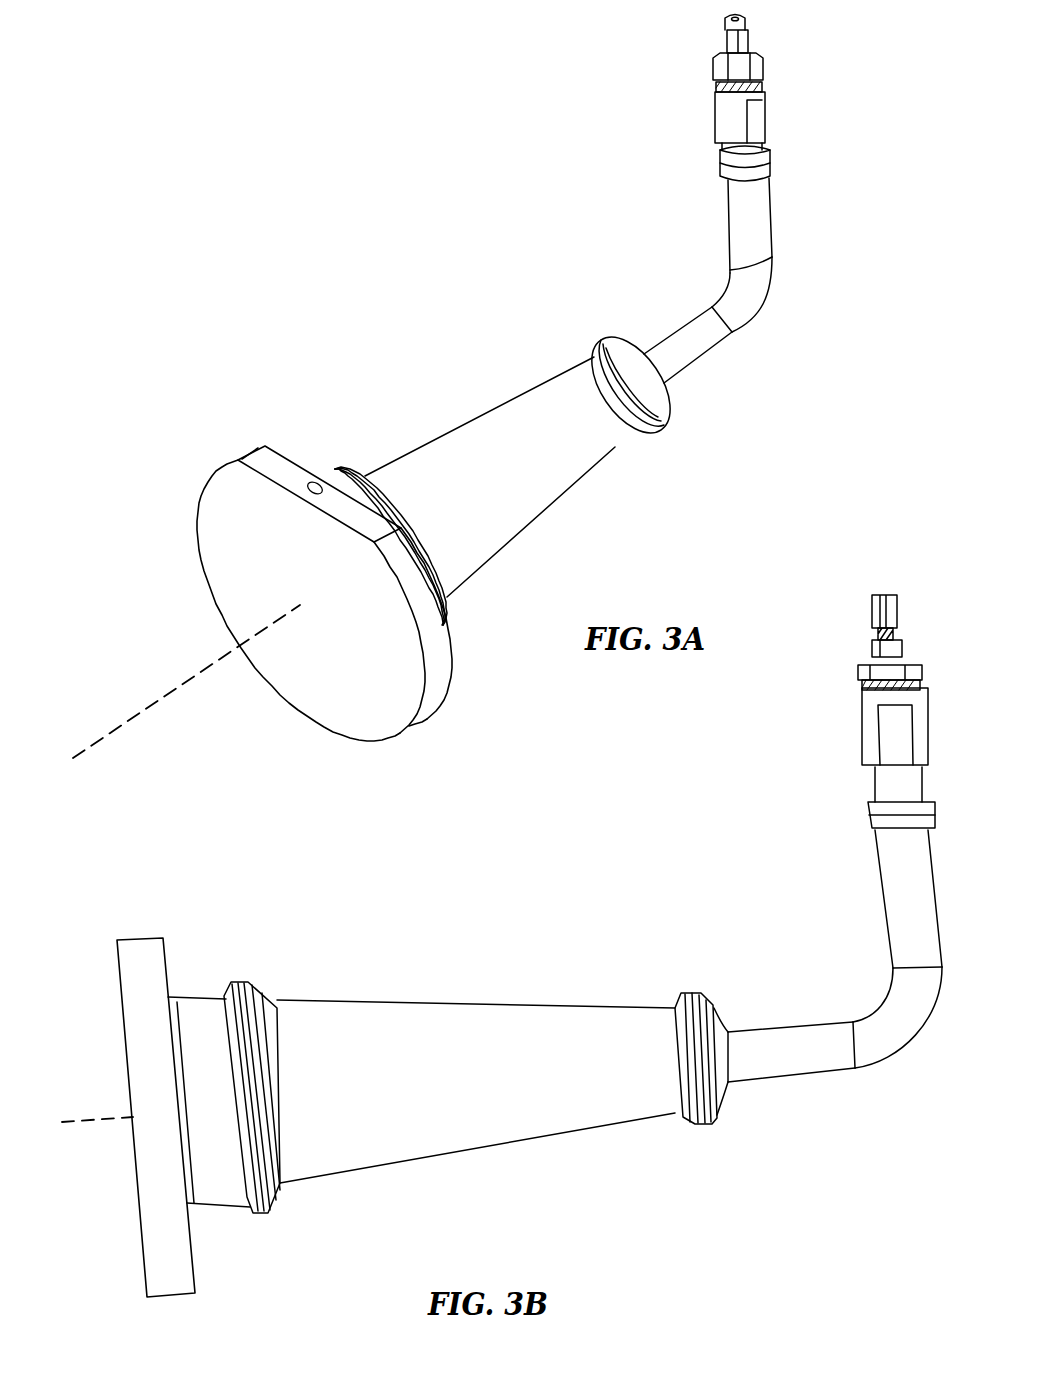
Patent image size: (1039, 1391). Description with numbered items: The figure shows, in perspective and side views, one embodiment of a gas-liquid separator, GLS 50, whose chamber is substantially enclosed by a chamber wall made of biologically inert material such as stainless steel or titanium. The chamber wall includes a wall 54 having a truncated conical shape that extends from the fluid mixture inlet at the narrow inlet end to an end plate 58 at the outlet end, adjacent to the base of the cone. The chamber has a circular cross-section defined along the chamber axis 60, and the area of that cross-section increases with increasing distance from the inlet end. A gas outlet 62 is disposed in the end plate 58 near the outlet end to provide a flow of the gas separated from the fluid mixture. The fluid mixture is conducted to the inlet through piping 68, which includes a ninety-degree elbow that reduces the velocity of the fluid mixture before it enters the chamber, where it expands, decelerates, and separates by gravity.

In FIG. 3A, the GLS 50 is at (489, 228).
In FIG. 3B, the GLS 50 is at (448, 890).
In FIG. 3A, the wall 54 is at (470, 450).
In FIG. 3B, the wall 54 is at (548, 1005).
In FIG. 3A, the end plate 58 is at (216, 520).
In FIG. 3B, the end plate 58 is at (127, 1052).
In FIG. 3A, the chamber axis 60 is at (188, 680).
In FIG. 3B, the chamber axis 60 is at (105, 1117).
In FIG. 3A, the gas outlet 62 is at (320, 480).
In FIG. 3A, the piping 68 is at (758, 305).
In FIG. 3B, the piping 68 is at (920, 1035).